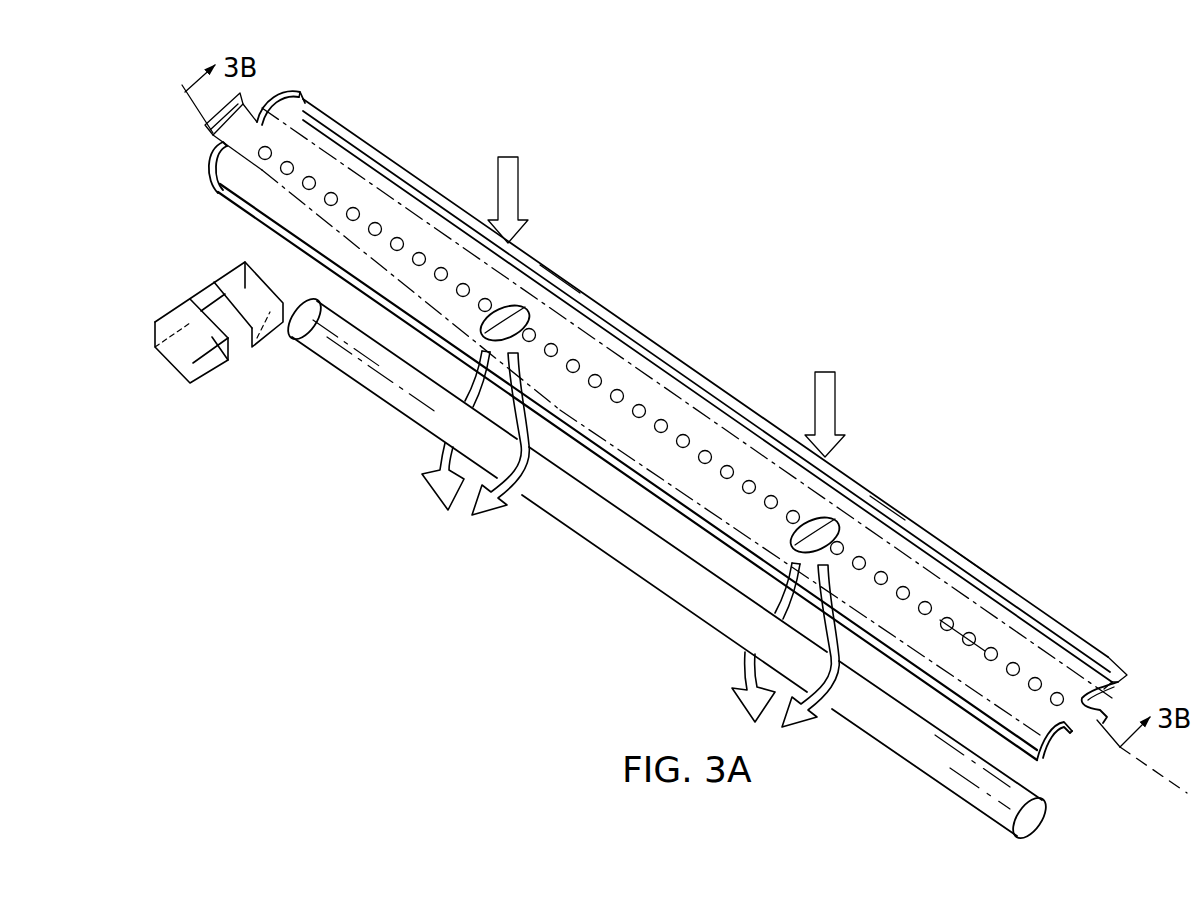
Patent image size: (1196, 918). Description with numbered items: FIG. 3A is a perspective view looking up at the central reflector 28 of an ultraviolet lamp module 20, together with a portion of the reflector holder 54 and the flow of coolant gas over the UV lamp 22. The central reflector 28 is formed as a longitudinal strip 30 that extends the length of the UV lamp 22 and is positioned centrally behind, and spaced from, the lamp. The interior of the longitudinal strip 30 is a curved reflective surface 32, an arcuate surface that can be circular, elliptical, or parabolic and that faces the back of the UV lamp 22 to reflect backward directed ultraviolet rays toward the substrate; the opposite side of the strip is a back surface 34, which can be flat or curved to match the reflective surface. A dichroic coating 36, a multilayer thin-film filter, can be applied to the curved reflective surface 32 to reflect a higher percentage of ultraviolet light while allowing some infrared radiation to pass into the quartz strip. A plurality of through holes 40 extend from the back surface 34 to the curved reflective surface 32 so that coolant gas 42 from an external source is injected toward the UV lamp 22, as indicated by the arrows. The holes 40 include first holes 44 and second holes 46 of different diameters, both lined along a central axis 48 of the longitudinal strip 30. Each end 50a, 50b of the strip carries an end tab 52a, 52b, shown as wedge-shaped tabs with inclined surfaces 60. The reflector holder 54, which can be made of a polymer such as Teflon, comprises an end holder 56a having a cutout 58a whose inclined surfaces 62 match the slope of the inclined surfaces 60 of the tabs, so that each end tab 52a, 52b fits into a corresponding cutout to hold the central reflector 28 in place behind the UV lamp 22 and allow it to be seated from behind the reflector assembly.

The ultraviolet lamp module 20 is at (895, 437).
The UV lamp 22 is at (930, 773).
The central reflector 28 is at (604, 293).
The longitudinal strip 30 is at (975, 566).
The curved reflective surface 32 is at (964, 592).
The back surface 34 is at (887, 497).
The dichroic coating 36 is at (555, 297).
The through holes 40 is at (397, 238).
The coolant gas 42 is at (520, 180).
The first holes 44 is at (353, 208).
The second holes 46 is at (500, 313).
The central axis 48 is at (1135, 753).
The end 50a is at (289, 79).
The end 50b is at (1119, 643).
The end tab 52a is at (220, 130).
The end tab 52b is at (1067, 723).
The reflector holder 54 is at (163, 358).
The end holder 56a is at (208, 378).
The cutout 58a is at (235, 347).
The inclined surface 60 is at (257, 106).
The inclined surface 62 is at (228, 318).